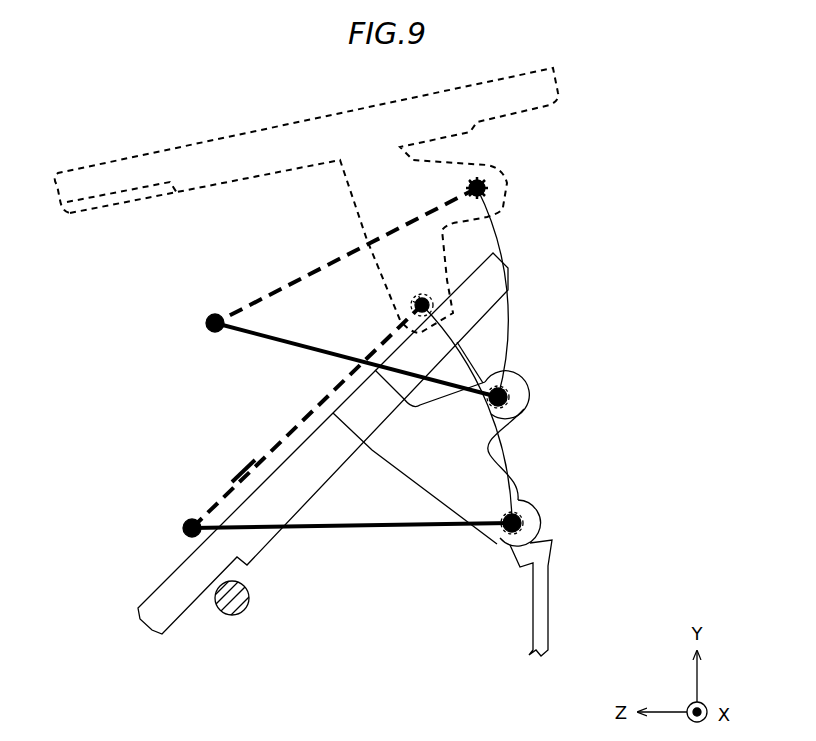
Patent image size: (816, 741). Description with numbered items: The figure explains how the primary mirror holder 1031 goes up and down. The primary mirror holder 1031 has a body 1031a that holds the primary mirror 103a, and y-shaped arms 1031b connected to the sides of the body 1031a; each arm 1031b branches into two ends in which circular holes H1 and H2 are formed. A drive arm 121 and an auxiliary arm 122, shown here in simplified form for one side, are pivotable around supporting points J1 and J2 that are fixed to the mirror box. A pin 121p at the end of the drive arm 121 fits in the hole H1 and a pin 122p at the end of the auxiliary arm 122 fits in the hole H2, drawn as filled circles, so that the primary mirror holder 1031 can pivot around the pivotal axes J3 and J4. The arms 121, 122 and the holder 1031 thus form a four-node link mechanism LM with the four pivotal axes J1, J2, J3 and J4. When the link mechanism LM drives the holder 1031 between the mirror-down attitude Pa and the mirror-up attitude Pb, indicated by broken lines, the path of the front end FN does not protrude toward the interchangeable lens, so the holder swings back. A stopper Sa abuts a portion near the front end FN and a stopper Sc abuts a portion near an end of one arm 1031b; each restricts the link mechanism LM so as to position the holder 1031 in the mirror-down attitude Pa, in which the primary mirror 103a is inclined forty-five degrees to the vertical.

The primary mirror holder 1031 is at (558, 80).
The body 1031a is at (262, 560).
The y-shaped arm 1031b is at (520, 482).
The drive arm 121 is at (283, 290).
The auxiliary arm 122 is at (222, 494).
The pin 121p is at (528, 406).
The pin 122p is at (532, 526).
The primary mirror 103a is at (245, 466).
The circular hole H1 is at (530, 392).
The circular hole H2 is at (532, 512).
The supporting point J1 is at (215, 314).
The supporting point J2 is at (185, 519).
The pivotal axis J3 is at (507, 383).
The pivotal axis J4 is at (527, 520).
The stopper Sa is at (252, 600).
The stopper Sc is at (549, 605).
The mirror-down attitude Pa is at (114, 430).
The mirror-up attitude Pb is at (77, 224).
The four-node link mechanism LM is at (163, 362).
The front end FN is at (147, 629).